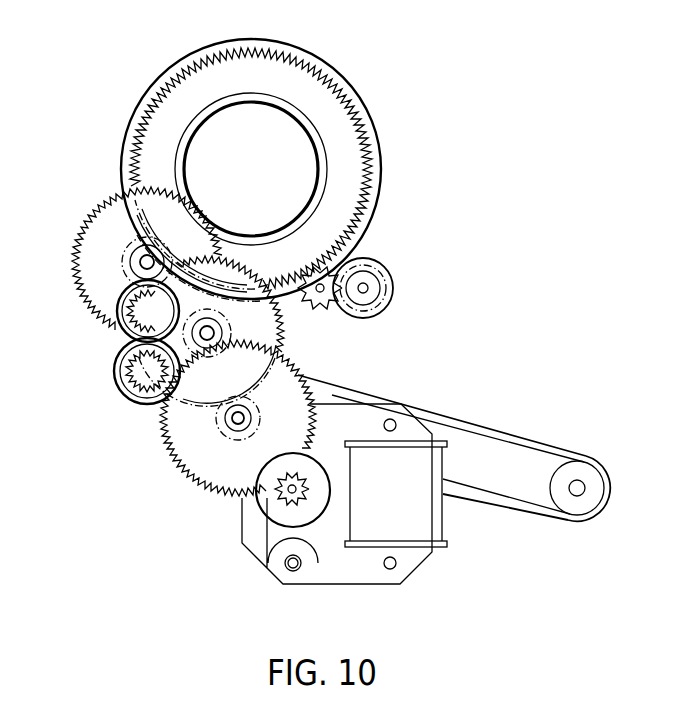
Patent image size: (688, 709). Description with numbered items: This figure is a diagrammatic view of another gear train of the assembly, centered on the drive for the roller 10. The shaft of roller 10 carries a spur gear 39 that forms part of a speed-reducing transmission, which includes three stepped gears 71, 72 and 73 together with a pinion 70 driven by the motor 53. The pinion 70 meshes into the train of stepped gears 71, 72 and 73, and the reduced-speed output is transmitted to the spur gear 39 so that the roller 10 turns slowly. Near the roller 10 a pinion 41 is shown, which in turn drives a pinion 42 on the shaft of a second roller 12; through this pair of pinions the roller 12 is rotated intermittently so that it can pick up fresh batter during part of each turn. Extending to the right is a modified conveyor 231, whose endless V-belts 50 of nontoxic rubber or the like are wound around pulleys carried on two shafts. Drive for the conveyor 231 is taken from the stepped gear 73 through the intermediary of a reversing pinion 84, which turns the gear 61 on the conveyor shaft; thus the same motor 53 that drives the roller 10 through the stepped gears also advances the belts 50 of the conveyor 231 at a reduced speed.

The roller 10 is at (325, 66).
The spur gear 39 is at (152, 106).
The stepped gear 73 is at (80, 234).
The reversing pinion 84 is at (110, 324).
The worm gear 61 is at (118, 381).
The stepped gear 72 is at (145, 376).
The stepped gear 71 is at (208, 493).
The pinion 70 is at (278, 498).
The pinion 41 is at (316, 313).
The roller 12 is at (389, 305).
The pinion 42 is at (384, 272).
The endless V-belts 50 is at (499, 428).
The modified conveyor 231 is at (543, 434).
The motor 53 is at (437, 523).